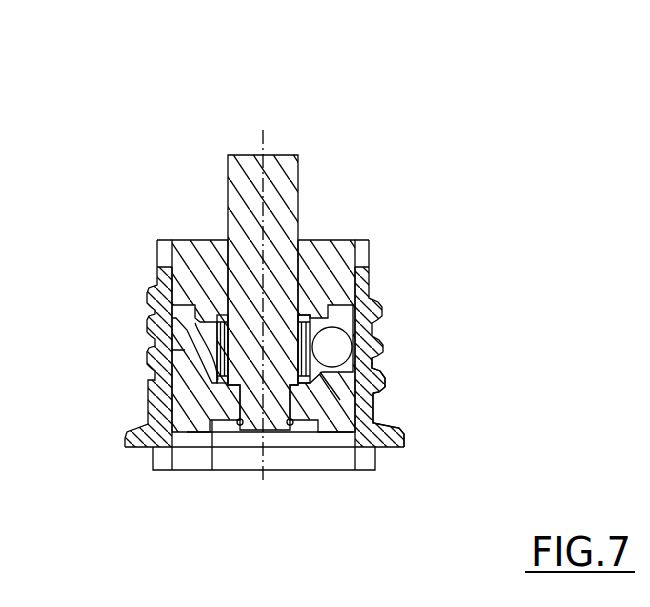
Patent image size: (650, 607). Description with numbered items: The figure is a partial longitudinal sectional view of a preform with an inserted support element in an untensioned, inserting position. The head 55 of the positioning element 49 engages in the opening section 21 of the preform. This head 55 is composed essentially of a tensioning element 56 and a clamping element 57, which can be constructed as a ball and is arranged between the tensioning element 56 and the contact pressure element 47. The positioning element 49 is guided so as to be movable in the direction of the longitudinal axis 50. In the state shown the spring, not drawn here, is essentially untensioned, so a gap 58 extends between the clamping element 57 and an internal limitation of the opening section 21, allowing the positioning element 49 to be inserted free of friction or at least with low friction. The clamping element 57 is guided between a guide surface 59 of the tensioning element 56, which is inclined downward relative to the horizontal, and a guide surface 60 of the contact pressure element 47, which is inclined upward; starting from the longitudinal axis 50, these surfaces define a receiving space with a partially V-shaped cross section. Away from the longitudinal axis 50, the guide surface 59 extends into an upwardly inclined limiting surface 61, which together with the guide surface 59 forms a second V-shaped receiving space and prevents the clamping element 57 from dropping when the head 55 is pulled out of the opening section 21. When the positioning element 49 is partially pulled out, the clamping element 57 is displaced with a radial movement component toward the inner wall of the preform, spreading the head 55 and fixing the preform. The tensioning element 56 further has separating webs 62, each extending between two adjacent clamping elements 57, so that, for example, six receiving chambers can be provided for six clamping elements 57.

The positioning element 49 is at (175, 183).
The longitudinal axis 50 is at (263, 150).
The contact pressure element 47 is at (338, 258).
The guide surface 60 is at (316, 306).
The gap 58 is at (376, 300).
The clamping element 57 is at (335, 348).
The limiting surface 61 is at (376, 393).
The guide surface 59 is at (376, 413).
The opening section 21 is at (148, 322).
The separating webs 62 is at (185, 351).
The tensioning element 56 is at (212, 470).
The head 55 is at (185, 490).